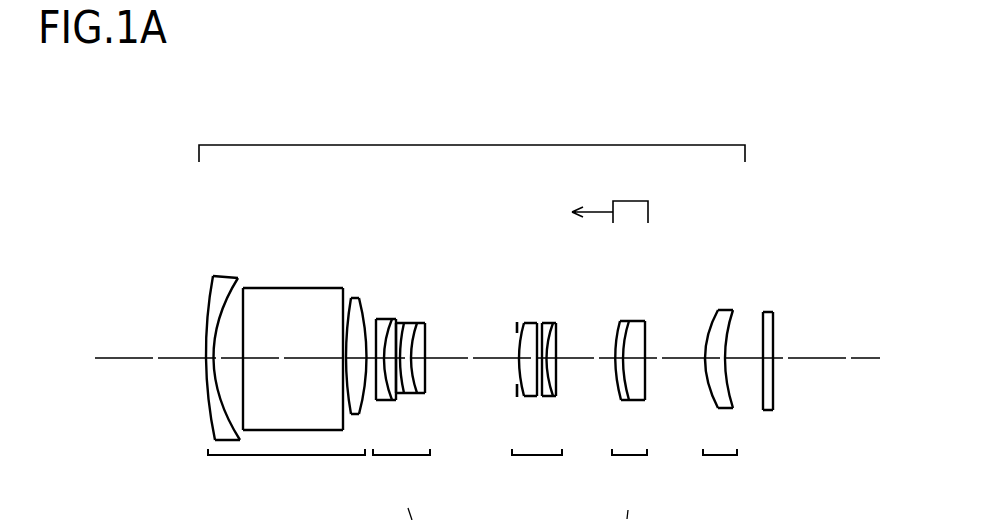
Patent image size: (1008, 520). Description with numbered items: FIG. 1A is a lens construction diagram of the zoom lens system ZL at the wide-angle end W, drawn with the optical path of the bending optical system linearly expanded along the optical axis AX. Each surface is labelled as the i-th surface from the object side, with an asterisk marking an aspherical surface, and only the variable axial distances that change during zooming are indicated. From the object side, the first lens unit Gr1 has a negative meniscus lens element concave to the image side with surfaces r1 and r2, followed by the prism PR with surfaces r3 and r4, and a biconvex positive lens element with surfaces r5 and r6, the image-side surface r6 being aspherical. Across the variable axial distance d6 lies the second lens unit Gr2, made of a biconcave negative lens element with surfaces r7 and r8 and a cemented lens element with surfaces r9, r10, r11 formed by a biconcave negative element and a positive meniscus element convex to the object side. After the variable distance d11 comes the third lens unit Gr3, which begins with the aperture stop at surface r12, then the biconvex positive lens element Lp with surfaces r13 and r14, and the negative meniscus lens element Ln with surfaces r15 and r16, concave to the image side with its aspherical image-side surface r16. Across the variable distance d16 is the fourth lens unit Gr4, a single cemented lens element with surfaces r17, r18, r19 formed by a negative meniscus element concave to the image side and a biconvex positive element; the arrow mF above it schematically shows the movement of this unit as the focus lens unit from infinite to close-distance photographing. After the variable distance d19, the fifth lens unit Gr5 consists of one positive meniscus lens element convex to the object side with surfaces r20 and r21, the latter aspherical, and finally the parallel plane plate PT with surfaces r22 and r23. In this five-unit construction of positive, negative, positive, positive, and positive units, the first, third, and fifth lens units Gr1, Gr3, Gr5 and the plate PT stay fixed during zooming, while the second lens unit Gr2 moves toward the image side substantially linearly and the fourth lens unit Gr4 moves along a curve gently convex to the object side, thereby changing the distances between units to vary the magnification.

The first surface r1 is at (213, 277).
The second surface r2 is at (237, 279).
The third surface r3 is at (249, 289).
The fourth surface r4 is at (341, 299).
The fifth surface r5 is at (355, 303).
The sixth surface r6 is at (372, 312).
The seventh surface r7 is at (383, 318).
The eighth surface r8 is at (394, 318).
The ninth surface r9 is at (404, 322).
The tenth surface r10 is at (415, 322).
The eleventh surface r11 is at (427, 325).
The twelfth surface r12 is at (517, 322).
The thirteenth surface r13 is at (521, 323).
The fourteenth surface r14 is at (537, 322).
The fifteenth surface r15 is at (549, 323).
The sixteenth surface r16 is at (557, 324).
The seventeenth surface r17 is at (619, 320).
The eighteenth surface r18 is at (633, 319).
The nineteenth surface r19 is at (647, 322).
The twentieth surface r20 is at (716, 309).
The twenty-first surface r21 is at (735, 316).
The twenty-second surface r22 is at (764, 311).
The twenty-third surface r23 is at (776, 313).
The sixth axial distance d6 is at (373, 401).
The eleventh axial distance d11 is at (470, 345).
The sixteenth axial distance d16 is at (584, 345).
The nineteenth axial distance d19 is at (677, 345).
The prism PR is at (290, 421).
The biconvex positive lens element Lp is at (536, 398).
The negative meniscus lens element Ln is at (556, 398).
The parallel plane plate PT is at (768, 413).
The optical axis AX is at (800, 364).
The zoom lens system ZL is at (472, 140).
The focus movement arrow mF is at (585, 197).
The first lens unit Gr1 is at (286, 468).
The second lens unit Gr2 is at (401, 468).
The third lens unit Gr3 is at (537, 468).
The fourth lens unit Gr4 is at (628, 331).
The fifth lens unit Gr5 is at (720, 468).
The wide-angle end W is at (65, 357).